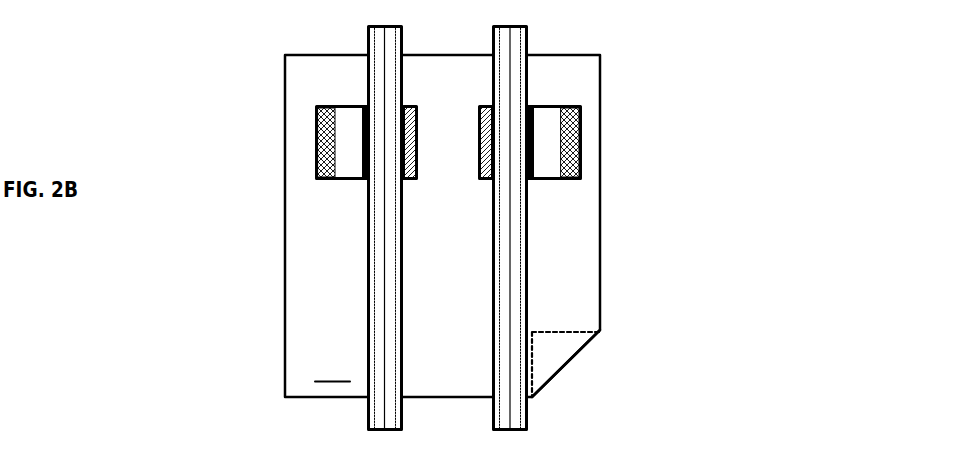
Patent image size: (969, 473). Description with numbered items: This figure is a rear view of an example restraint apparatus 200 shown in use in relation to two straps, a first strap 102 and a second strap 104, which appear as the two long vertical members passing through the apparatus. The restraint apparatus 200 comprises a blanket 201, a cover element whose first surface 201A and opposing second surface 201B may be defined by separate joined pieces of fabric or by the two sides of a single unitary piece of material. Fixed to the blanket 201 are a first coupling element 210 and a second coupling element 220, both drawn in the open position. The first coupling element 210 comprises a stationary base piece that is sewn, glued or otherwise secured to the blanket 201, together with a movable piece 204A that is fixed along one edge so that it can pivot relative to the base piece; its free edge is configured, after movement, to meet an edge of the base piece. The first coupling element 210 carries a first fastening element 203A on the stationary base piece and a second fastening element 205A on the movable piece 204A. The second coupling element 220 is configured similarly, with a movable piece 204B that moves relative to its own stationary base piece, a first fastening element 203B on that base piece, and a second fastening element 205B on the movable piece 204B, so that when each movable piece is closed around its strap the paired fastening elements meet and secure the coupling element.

The restraint apparatus 200 is at (447, 215).
The blanket 201 is at (507, 226).
The first surface 201A is at (552, 285).
The second surface 201B is at (562, 350).
The first coupling element 210 is at (320, 220).
The second coupling element 220 is at (566, 220).
The strap 102 is at (349, 220).
The second pin 104 is at (518, 27).
The first fastening element 203A is at (407, 128).
The first fastening element 203B is at (482, 175).
The movable piece 204A is at (276, 159).
The movable piece 204B is at (600, 176).
The second fastening element 205A is at (348, 182).
The second fastening element 205B is at (567, 168).